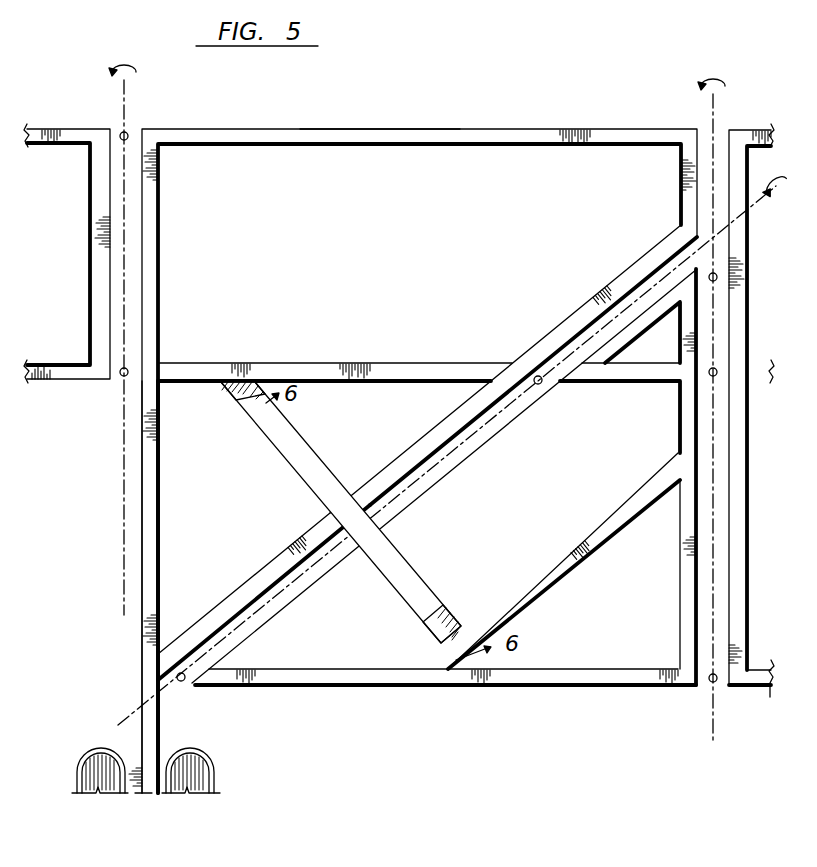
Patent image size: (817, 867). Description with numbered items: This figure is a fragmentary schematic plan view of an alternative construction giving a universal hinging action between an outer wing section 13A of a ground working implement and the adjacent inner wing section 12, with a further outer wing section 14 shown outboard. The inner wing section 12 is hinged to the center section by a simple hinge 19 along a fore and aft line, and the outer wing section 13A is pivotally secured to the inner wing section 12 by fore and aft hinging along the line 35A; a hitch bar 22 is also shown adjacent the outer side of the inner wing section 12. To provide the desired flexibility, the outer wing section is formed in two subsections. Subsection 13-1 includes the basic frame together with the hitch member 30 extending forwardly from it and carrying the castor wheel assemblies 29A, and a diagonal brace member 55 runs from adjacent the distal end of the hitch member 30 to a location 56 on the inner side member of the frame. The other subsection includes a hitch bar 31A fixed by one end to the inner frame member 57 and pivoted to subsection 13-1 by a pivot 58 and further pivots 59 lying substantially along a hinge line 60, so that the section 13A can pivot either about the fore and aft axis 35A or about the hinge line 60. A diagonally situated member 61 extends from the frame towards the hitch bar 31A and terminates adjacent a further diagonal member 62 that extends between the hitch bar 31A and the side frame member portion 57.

The inner wing section 12 is at (789, 273).
The subsection 13-1 of outer wing section 13-1 is at (392, 271).
The outer wing section 13A is at (432, 157).
The additional outer wing section 14 is at (58, 271).
The hinge 19 is at (128, 133).
The hitch bar 22 is at (770, 686).
The castor wheel assembly 29A is at (212, 792).
The hitch member 30 is at (159, 547).
The hitch bar 31A is at (544, 684).
The hinge line 35A is at (125, 101).
The diagonal brace member 55 is at (226, 590).
The location on inner side member of frame 56 is at (690, 224).
The inner frame member 57 is at (684, 617).
The pivot 58 is at (182, 682).
The pivot 59 is at (539, 385).
The hinge line 60 is at (482, 427).
The diagonal member 61 is at (308, 444).
The further diagonal member 62 is at (565, 575).